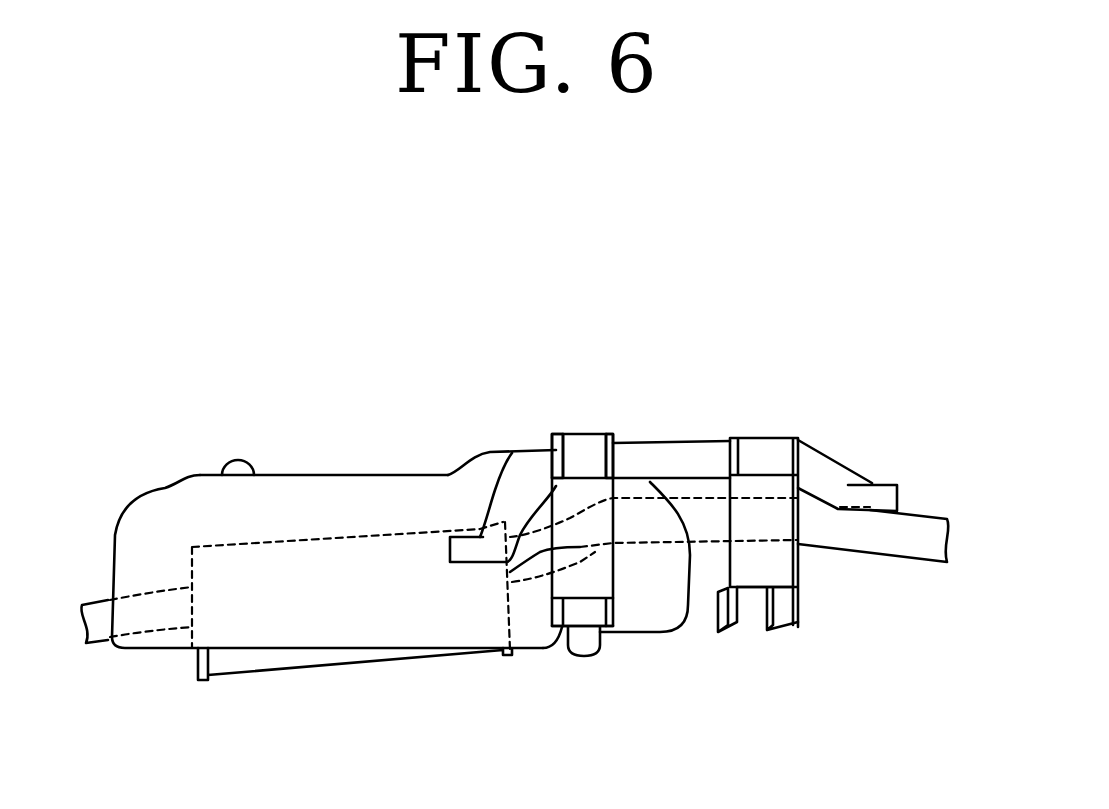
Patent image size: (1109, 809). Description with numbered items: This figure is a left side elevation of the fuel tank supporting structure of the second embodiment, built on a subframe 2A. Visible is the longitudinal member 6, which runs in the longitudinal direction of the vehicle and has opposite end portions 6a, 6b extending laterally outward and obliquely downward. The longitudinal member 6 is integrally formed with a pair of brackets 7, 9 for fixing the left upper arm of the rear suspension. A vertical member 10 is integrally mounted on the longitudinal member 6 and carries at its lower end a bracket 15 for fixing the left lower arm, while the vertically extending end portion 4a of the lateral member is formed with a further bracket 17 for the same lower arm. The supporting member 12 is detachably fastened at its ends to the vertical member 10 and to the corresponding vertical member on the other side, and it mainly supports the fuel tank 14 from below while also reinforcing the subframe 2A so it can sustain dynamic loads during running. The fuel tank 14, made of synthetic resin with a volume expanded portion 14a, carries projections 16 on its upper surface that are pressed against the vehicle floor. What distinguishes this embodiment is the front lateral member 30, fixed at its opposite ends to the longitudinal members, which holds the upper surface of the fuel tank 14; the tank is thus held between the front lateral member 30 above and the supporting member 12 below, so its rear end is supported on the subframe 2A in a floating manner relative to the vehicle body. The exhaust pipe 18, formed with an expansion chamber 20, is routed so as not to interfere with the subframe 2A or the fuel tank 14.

The subframe 2A is at (757, 413).
The end portion of the lateral member 4a is at (780, 557).
The longitudinal member 6 is at (662, 457).
The end portion of the longitudinal member 6a is at (487, 507).
The end portion of the longitudinal member 6b is at (842, 475).
The bracket 7 is at (608, 440).
The bracket 9 is at (795, 438).
The vertical member 10 is at (510, 572).
The supporting member 12 is at (583, 652).
The fuel tank 14 is at (333, 488).
The volume expanded portion 14a is at (503, 448).
The bracket 15 is at (620, 630).
The projection 16 is at (238, 463).
The bracket 17 is at (772, 635).
The exhaust pipe 18 is at (913, 545).
The expansion chamber 20 is at (250, 668).
The front lateral member 30 is at (575, 440).